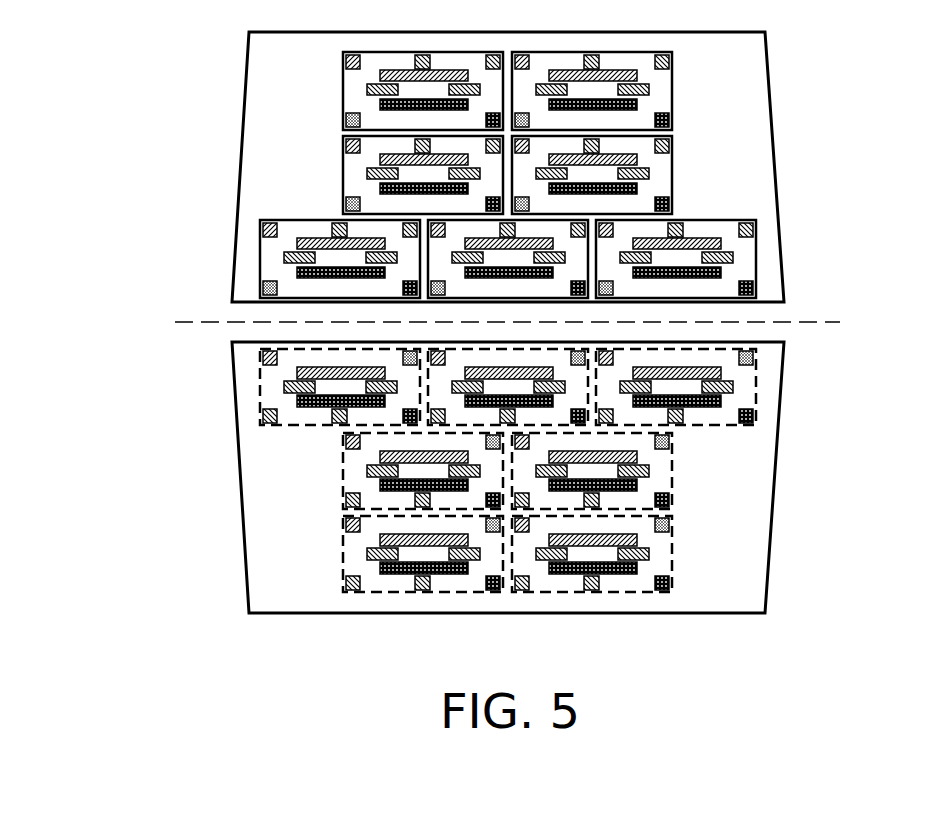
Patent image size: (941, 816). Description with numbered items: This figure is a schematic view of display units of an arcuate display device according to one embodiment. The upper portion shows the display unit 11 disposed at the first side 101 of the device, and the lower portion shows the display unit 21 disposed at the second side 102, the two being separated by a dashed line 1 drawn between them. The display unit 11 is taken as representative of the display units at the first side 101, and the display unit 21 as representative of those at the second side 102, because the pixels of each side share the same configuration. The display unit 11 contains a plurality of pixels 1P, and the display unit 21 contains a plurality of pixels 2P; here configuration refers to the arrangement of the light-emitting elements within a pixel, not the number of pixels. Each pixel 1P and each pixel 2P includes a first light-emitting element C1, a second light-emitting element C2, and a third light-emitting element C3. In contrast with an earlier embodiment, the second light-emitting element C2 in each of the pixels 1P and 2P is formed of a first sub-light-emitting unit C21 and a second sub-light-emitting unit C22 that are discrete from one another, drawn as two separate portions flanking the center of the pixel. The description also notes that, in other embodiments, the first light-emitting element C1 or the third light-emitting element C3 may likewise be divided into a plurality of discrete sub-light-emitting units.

The cutting line 1 is at (838, 322).
The first side 101 is at (554, 167).
The second side 102 is at (550, 477).
The display unit 11 is at (246, 100).
The display unit 21 is at (244, 535).
The pixel 1P is at (286, 219).
The pixel 2P is at (287, 425).
The first light-emitting element C1 is at (297, 272).
The second light-emitting element C2 is at (85, 15).
The first sub-light-emitting unit C21 is at (284, 257).
The second sub-light-emitting unit C22 is at (366, 256).
The third light-emitting element C3 is at (297, 243).